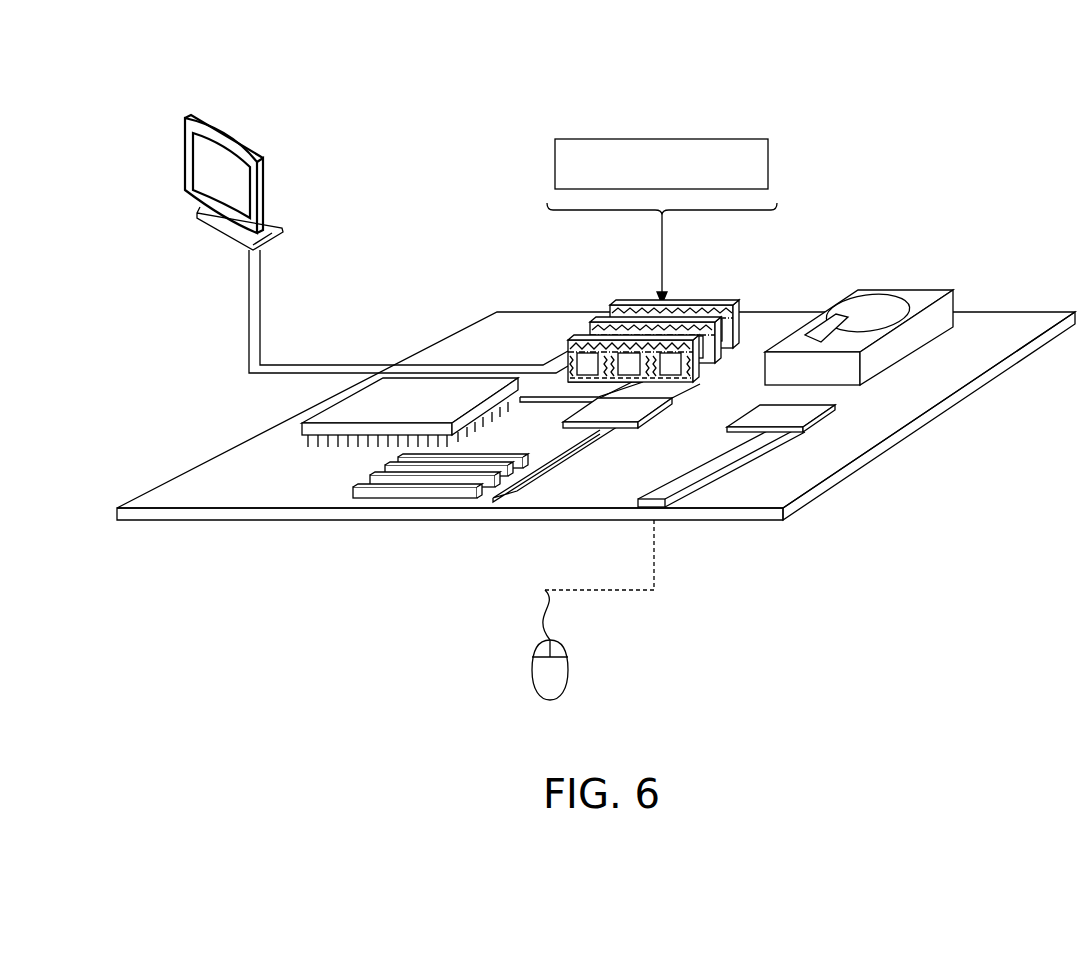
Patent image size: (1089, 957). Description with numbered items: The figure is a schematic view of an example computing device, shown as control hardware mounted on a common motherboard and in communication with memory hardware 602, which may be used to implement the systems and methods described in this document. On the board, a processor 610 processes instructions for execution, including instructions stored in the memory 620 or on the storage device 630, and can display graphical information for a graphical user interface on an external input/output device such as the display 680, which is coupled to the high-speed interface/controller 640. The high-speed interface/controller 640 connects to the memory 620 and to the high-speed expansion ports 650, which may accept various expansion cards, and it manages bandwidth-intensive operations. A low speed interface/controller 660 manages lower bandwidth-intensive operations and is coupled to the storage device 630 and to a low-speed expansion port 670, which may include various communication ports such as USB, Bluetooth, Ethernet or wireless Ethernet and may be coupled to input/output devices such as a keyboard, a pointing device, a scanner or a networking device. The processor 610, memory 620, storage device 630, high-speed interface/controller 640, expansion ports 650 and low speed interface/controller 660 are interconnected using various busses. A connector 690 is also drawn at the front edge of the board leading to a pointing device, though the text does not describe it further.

The memory hardware 602 is at (660, 139).
The processor 610 is at (302, 423).
The memory 620 is at (590, 326).
The storage device 630 is at (902, 290).
The high-speed interface/controller 640 is at (622, 428).
The high-speed expansion ports 650 is at (353, 490).
The low speed interface/controller 660 is at (768, 406).
The low-speed expansion port 670 is at (727, 466).
The display 680 is at (185, 163).
The input port / connector 690 is at (667, 508).